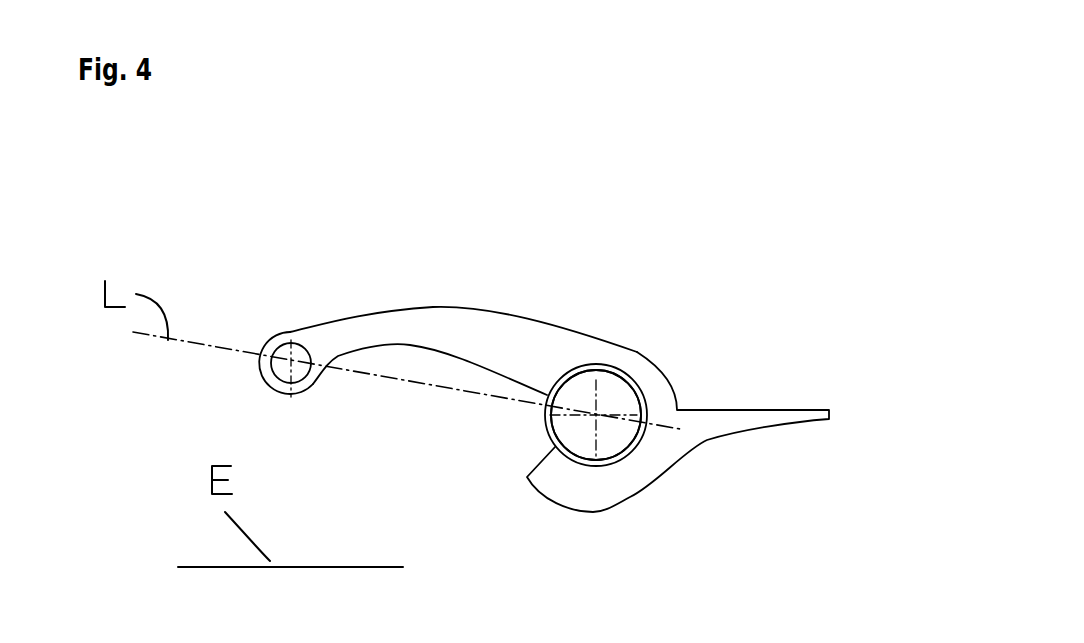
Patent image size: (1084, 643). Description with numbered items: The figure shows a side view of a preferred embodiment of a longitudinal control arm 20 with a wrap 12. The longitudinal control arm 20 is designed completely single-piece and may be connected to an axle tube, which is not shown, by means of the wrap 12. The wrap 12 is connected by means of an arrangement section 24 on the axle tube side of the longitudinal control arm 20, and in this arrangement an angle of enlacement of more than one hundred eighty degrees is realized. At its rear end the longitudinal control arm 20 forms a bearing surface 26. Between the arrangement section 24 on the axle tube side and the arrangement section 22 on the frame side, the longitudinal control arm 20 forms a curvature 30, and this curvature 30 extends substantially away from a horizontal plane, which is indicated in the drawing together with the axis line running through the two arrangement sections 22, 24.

The longitudinal control arm 20 is at (791, 213).
The arrangement section on the frame side 22 is at (266, 319).
The arrangement section on the axle tube side 24 is at (627, 345).
The wrap 12 is at (638, 393).
The bearing surface 26 is at (707, 432).
The curvature 30 is at (455, 322).